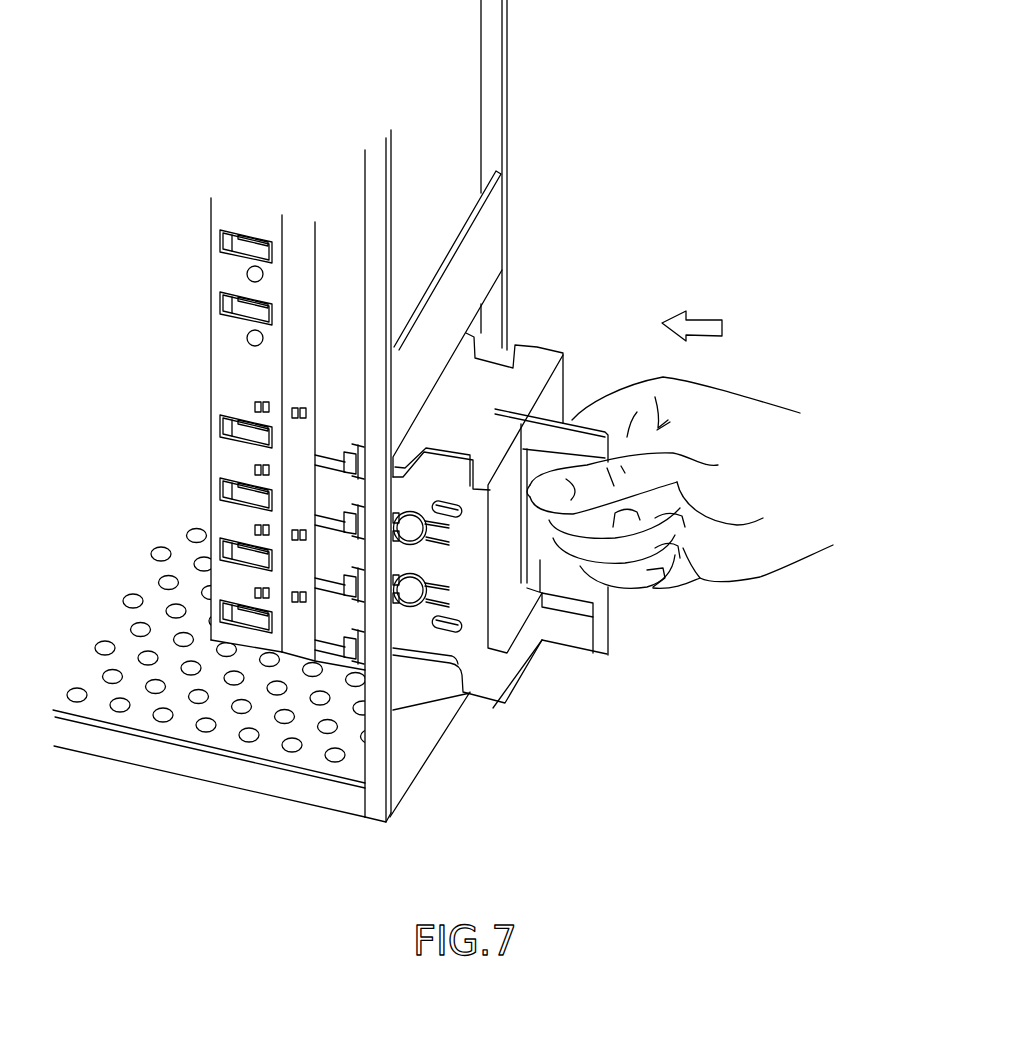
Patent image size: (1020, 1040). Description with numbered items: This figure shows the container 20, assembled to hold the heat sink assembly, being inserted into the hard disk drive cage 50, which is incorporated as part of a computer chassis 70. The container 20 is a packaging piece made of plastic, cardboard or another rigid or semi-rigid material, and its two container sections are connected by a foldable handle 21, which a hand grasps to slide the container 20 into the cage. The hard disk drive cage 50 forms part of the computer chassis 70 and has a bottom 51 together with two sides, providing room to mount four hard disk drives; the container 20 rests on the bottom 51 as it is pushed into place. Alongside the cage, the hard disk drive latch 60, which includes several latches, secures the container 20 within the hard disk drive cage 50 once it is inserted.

The container 20 is at (485, 692).
The foldable handle 21 is at (583, 642).
The hard disk drive cage 50 is at (352, 648).
The bottom 51 is at (403, 658).
The hard disk drive latch 60 is at (223, 345).
The computer chassis 70 is at (530, 94).